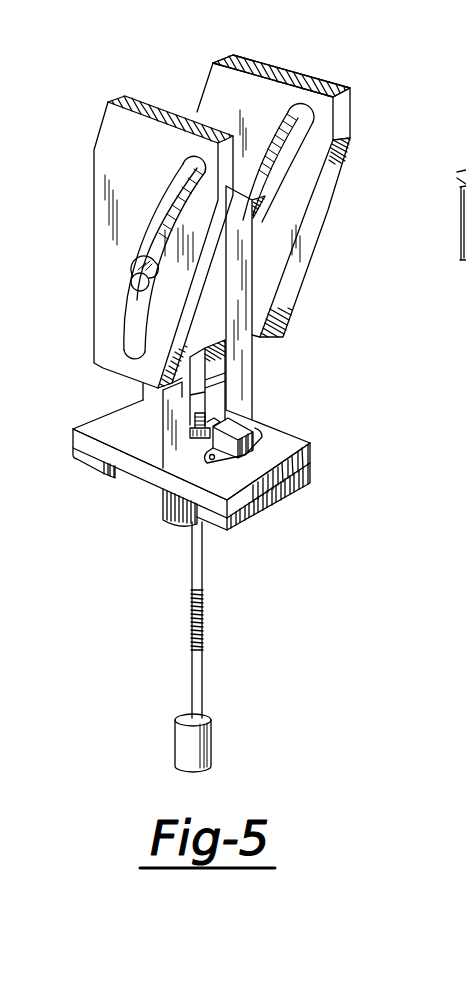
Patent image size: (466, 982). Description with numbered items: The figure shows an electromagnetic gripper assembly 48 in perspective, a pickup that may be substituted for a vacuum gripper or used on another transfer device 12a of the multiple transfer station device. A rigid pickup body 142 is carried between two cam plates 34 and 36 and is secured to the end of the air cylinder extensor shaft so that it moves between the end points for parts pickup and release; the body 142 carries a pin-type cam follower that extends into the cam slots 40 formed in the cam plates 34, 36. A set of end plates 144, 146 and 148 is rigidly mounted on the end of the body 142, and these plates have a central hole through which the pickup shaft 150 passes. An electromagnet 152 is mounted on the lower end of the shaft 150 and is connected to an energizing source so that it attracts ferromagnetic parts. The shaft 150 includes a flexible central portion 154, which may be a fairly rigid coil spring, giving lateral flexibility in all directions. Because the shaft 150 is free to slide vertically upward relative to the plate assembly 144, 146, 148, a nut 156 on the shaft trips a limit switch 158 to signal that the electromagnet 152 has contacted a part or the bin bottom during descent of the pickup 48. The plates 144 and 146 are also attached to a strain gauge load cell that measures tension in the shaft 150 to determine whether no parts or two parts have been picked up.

The transfer device 12a is at (357, 90).
The cam plate 34 is at (113, 233).
The cam plate 36 is at (217, 87).
The cam slot 40 is at (182, 176).
The electromagnetic gripper assembly 48 is at (268, 410).
The pickup body 142 is at (240, 377).
The end plate 144 is at (300, 455).
The end plate 146 is at (278, 503).
The end plate 148 is at (100, 468).
The pickup shaft 150 is at (200, 572).
The electromagnet 152 is at (203, 747).
The flexible central portion 154 is at (202, 625).
The nut 156 is at (200, 440).
The limit switch 158 is at (253, 443).